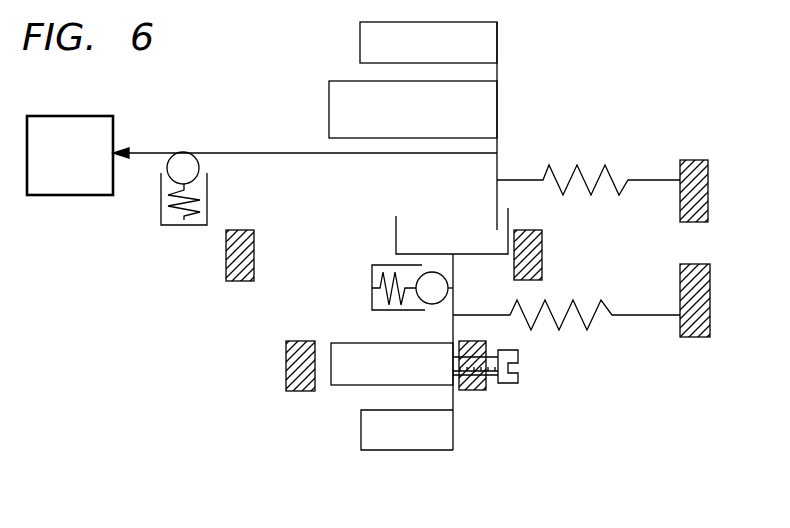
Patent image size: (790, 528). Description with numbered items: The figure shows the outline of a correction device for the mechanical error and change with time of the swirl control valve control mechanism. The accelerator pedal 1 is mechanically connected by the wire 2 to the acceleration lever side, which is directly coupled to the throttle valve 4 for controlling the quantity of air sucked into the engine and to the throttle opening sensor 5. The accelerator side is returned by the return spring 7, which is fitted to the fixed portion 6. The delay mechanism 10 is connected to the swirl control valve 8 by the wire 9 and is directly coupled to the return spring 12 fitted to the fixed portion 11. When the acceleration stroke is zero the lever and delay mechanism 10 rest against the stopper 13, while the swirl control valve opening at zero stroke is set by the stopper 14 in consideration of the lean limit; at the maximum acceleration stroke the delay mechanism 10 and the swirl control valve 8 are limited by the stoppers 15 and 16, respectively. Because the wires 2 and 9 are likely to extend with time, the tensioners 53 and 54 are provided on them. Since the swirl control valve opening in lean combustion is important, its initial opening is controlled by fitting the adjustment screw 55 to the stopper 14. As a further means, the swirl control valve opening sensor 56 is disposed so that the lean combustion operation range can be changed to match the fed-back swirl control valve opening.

The accelerator pedal 1 is at (78, 197).
The wire 2 is at (272, 153).
The throttle valve 4 is at (497, 108).
The throttle opening sensor 5 is at (497, 41).
The fixed portion 6 is at (708, 192).
The return spring 7 is at (615, 165).
The swirl control valve 8 is at (345, 385).
The wire 9 is at (453, 288).
The delay mechanism 10 is at (508, 218).
The fixed portion 11 is at (710, 305).
The return spring 12 is at (597, 327).
The stopper 13 is at (542, 252).
The stopper 14 is at (478, 391).
The stopper 15 is at (226, 255).
The stopper 16 is at (286, 352).
The tensioner 53 is at (172, 225).
The tensioner 54 is at (372, 295).
The adjustment screw 55 is at (520, 367).
The swirl control valve opening sensor 56 is at (415, 450).